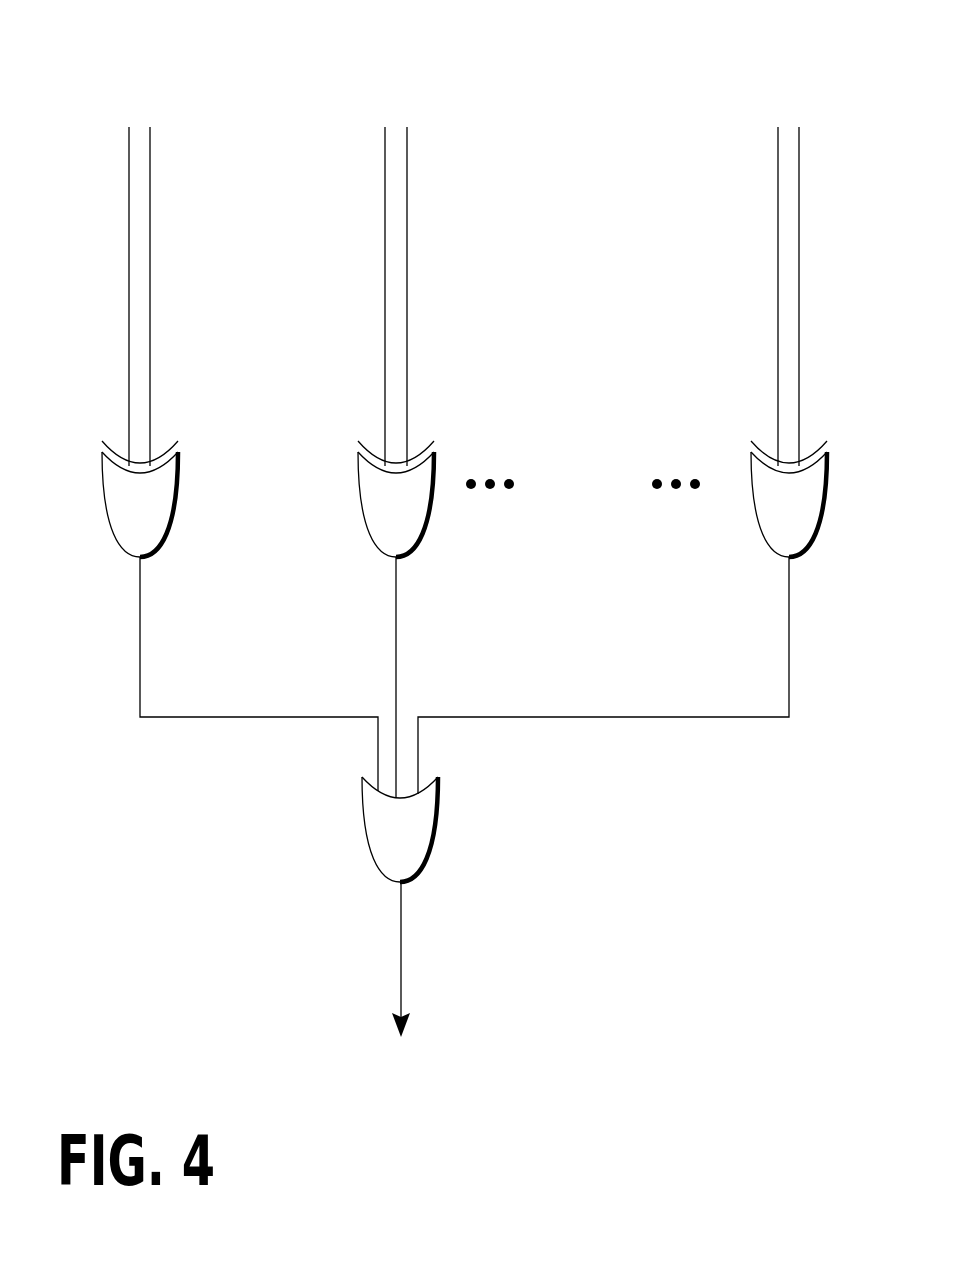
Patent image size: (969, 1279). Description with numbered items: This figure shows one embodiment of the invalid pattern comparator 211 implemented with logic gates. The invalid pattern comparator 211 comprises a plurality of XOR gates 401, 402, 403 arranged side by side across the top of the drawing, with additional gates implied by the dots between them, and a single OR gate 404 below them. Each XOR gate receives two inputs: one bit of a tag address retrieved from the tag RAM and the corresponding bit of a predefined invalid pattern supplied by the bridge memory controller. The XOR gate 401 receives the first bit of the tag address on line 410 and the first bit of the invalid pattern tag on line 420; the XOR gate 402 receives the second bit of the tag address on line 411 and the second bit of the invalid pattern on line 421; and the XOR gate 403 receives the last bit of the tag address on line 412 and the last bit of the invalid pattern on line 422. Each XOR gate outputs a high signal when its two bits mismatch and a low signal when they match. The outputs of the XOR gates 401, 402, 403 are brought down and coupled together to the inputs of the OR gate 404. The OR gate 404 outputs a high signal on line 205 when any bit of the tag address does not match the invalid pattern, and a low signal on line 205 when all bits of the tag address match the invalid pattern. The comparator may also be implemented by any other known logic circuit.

The invalid pattern comparator 211 is at (538, 84).
The XOR gate 401 is at (117, 520).
The XOR gate 402 is at (373, 520).
The XOR gate 403 is at (766, 520).
The OR gate 404 is at (377, 845).
The line 410 is at (129, 228).
The line 411 is at (385, 228).
The line 412 is at (778, 228).
The line 420 is at (150, 372).
The line 421 is at (407, 372).
The line 422 is at (799, 372).
The line 205 is at (401, 985).